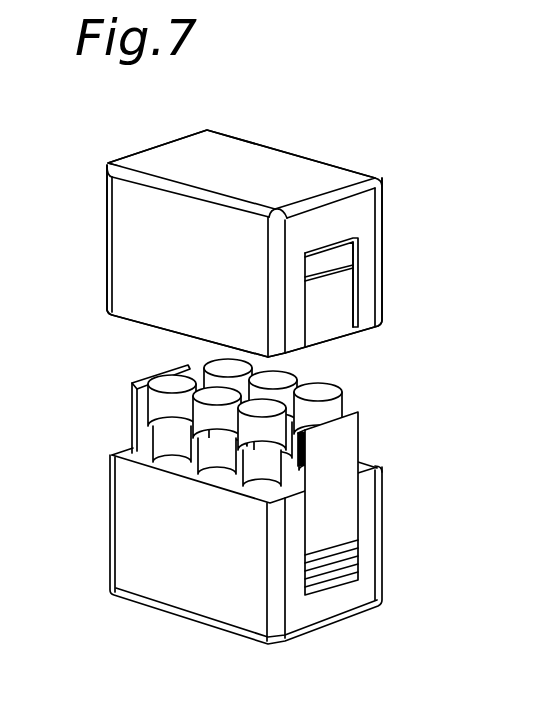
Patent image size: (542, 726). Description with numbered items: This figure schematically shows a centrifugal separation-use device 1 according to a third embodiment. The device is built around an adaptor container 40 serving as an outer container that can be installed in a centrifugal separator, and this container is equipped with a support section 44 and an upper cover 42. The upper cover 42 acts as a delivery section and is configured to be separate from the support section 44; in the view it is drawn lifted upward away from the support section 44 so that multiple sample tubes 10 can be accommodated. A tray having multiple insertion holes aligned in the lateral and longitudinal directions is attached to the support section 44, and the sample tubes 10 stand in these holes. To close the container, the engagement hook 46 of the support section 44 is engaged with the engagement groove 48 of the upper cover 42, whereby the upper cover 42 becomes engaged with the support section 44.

The centrifugal separation-use device 1 is at (66, 146).
The sample tubes 10 is at (415, 245).
The adaptor container 40 is at (395, 558).
The upper cover 42 is at (310, 157).
The support section 44 is at (223, 613).
The engagement hook 46 is at (352, 445).
The engagement groove 48 is at (344, 272).